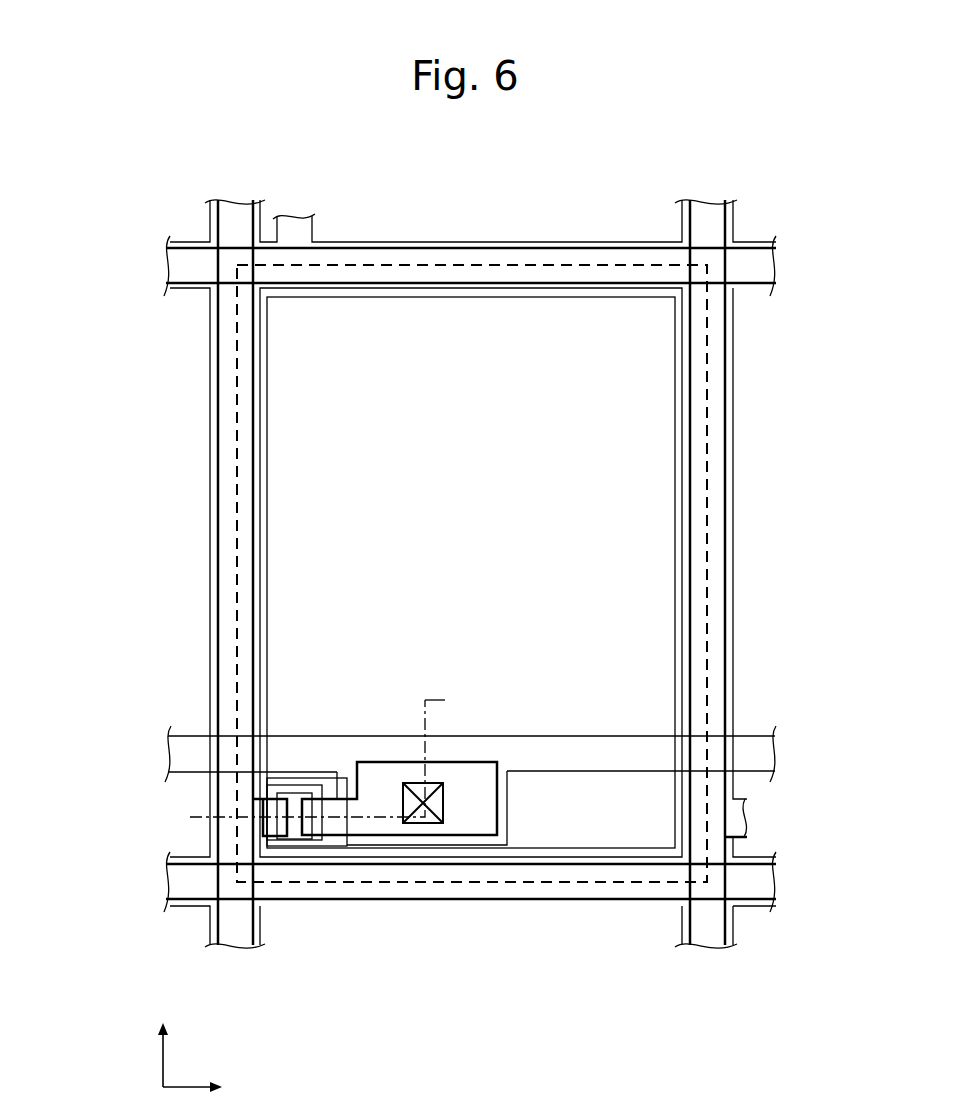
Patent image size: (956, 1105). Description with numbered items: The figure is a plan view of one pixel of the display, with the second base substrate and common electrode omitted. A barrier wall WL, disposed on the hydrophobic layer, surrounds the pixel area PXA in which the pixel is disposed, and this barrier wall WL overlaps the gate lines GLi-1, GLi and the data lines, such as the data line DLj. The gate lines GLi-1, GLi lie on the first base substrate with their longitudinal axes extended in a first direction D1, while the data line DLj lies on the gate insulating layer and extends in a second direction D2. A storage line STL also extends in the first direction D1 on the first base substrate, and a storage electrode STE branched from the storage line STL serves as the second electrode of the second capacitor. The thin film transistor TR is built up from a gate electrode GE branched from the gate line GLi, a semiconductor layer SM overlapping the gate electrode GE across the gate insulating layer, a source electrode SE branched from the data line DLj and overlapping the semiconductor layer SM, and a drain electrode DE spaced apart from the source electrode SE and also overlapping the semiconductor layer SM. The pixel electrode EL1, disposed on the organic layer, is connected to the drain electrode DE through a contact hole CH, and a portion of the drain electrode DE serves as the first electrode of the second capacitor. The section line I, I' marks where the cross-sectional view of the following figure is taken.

The pixel area PXA is at (537, 265).
The gate line GLi-1 is at (167, 263).
The gate line GLi is at (167, 882).
The data line DLj is at (237, 935).
The barrier wall WL is at (210, 510).
The pixel electrode EL1 is at (675, 475).
The storage line STL is at (168, 752).
The storage electrode STE is at (507, 804).
The thin film transistor TR is at (375, 878).
The source electrode SE is at (273, 824).
The semiconductor layer SM is at (288, 853).
The gate electrode GE is at (313, 850).
The drain electrode DE is at (308, 827).
The contact hole CH is at (445, 804).
The section line I is at (301, 765).
The section line I' is at (444, 700).
The first direction D1 is at (207, 1087).
The second direction D2 is at (163, 1042).